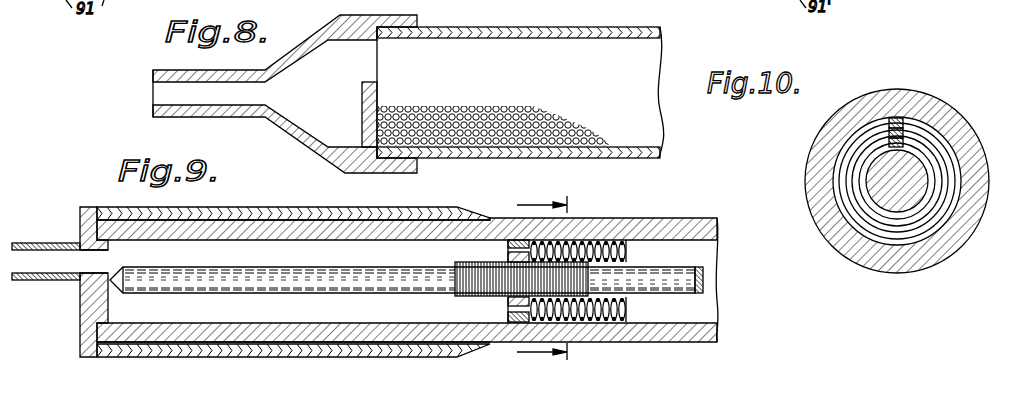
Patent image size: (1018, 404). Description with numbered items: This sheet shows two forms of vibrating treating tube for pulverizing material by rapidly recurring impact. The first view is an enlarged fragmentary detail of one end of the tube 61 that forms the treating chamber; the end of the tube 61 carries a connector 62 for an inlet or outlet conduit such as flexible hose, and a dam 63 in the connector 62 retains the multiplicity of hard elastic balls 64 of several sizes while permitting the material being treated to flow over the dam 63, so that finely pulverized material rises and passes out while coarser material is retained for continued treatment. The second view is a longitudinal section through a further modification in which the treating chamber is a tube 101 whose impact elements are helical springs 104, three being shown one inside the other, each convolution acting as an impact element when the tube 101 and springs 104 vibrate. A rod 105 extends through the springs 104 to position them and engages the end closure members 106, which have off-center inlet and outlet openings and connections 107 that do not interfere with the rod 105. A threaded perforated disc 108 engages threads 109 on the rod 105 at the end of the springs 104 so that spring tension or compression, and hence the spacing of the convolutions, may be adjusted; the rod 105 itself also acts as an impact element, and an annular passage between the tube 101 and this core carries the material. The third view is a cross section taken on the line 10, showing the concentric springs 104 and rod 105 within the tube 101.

In FIG. 8, the tube 61 is at (581, 14).
In FIG. 8, the connector 62 is at (278, 130).
In FIG. 8, the dam 63 is at (372, 90).
In FIG. 8, the balls 64 is at (486, 141).
In FIG. 9, the tube 101 is at (690, 207).
In FIG. 10, the tube 101 is at (962, 128).
In FIG. 9, the helical springs 104 is at (624, 252).
In FIG. 10, the helical springs 104 is at (891, 142).
In FIG. 9, the rod 105 is at (688, 283).
In FIG. 10, the rod 105 is at (882, 175).
In FIG. 9, the end closure members 106 is at (88, 308).
In FIG. 9, the connections 107 is at (60, 233).
In FIG. 9, the threaded perforated disc 108 is at (507, 248).
In FIG. 9, the threads 109 is at (505, 298).
In FIG. 9, the section line 10 is at (556, 280).